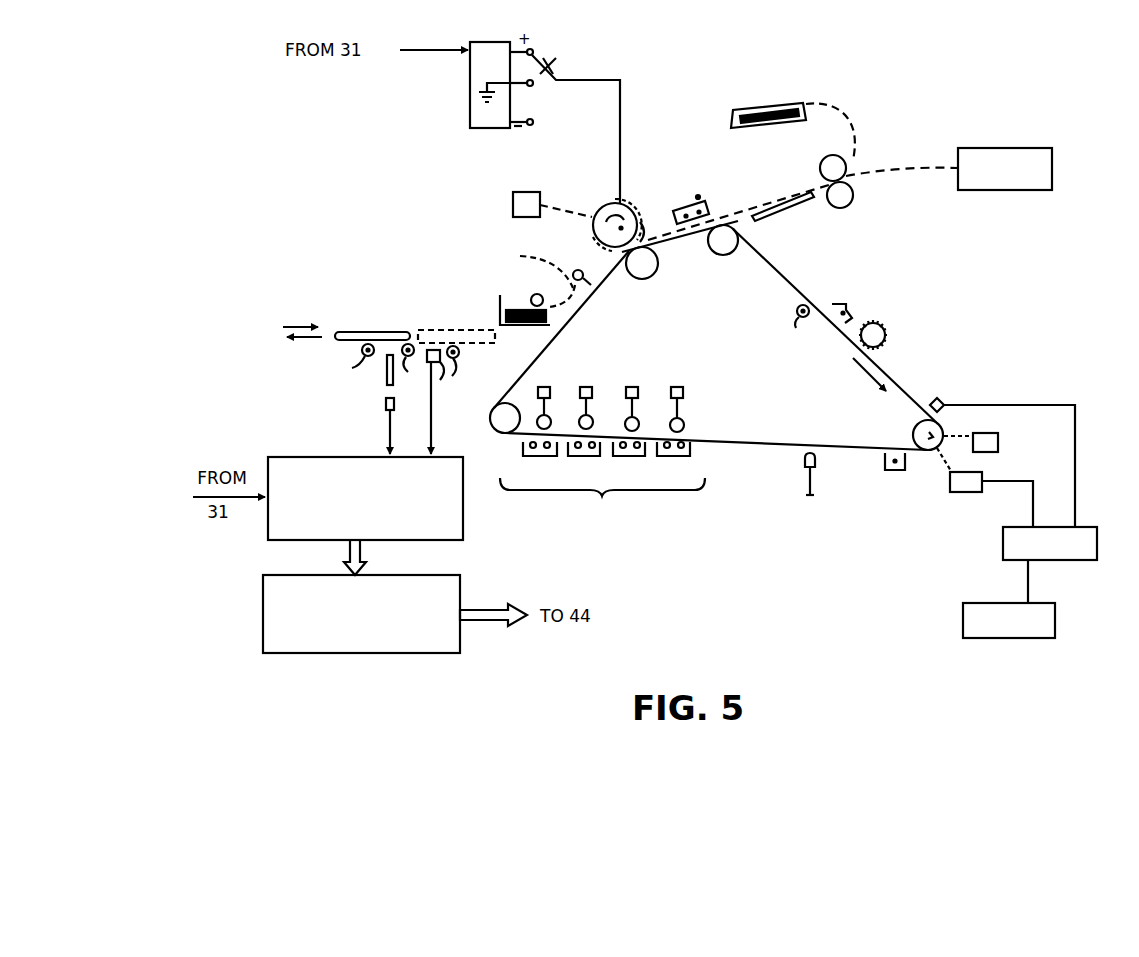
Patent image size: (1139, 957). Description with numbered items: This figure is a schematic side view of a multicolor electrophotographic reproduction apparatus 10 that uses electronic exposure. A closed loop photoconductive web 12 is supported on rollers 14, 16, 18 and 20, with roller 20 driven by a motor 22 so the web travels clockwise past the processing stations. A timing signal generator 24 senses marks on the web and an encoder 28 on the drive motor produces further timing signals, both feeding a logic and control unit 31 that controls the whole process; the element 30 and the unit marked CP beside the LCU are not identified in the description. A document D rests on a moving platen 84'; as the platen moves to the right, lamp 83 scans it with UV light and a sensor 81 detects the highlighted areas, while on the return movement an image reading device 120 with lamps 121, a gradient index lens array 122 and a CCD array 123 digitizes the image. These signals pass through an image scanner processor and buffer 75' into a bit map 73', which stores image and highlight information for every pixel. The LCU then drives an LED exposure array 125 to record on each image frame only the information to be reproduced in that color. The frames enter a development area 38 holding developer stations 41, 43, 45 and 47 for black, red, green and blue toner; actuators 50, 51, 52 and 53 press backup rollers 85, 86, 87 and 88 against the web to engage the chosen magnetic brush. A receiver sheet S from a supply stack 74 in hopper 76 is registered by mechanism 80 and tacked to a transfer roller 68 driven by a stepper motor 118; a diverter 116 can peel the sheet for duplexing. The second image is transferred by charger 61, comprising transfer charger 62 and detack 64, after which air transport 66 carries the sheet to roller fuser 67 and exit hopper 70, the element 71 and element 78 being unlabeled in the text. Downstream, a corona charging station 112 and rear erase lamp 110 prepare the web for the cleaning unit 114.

The electrophotographic reproduction apparatus 10 is at (918, 302).
The photoconductive web 12 is at (786, 279).
The roller 14 is at (723, 255).
The roller 16 is at (642, 279).
The roller 18 is at (493, 430).
The roller 20 is at (912, 431).
The motor 22 is at (999, 440).
The timing signal generator 24 is at (930, 400).
The encoder 28 is at (957, 492).
The sensor 30 is at (893, 477).
The logic and control unit 31 is at (1097, 545).
The development area 38 is at (602, 501).
The developer station 41 is at (540, 459).
The developer station 43 is at (590, 458).
The developer station 45 is at (636, 459).
The developer station 47 is at (683, 460).
The actuator 50 is at (551, 391).
The actuator 51 is at (593, 394).
The actuator 52 is at (650, 388).
The actuator 53 is at (684, 392).
The charger 61 is at (699, 195).
The transfer charger 62 is at (682, 203).
The detack 64 is at (718, 214).
The air transport 66 is at (798, 210).
The roller fuser 67 is at (856, 193).
The transfer roller 68 is at (613, 200).
The exit hopper 70 is at (734, 116).
The accumulator 71 is at (1052, 168).
The bit map 73' is at (384, 612).
The supply stack 74 is at (515, 308).
The image scanner processor and buffer 75' is at (389, 498).
The hopper 76 is at (499, 316).
The lens 78 is at (542, 298).
The registration mechanism 80 is at (555, 273).
The sensor 81 is at (444, 402).
The lamp 83 is at (468, 368).
The platen 84' is at (442, 317).
The backup roller 85 is at (551, 421).
The backup roller 86 is at (593, 421).
The backup roller 87 is at (639, 423).
The backup roller 88 is at (685, 425).
The rear erase lamp 110 is at (792, 329).
The corona charging station 112 is at (847, 306).
The cleaning unit 114 is at (898, 335).
The diverter 116 is at (655, 226).
The stepper motor 118 is at (511, 199).
The image reading device 120 is at (350, 360).
The lamps 121 is at (409, 373).
The gradient index lens array 122 is at (382, 377).
The charge coupled device array 123 is at (385, 410).
The LED exposure array 125 is at (800, 464).
The document D is at (345, 328).
The receiver sheet S is at (507, 253).
The control panel CP is at (1055, 622).